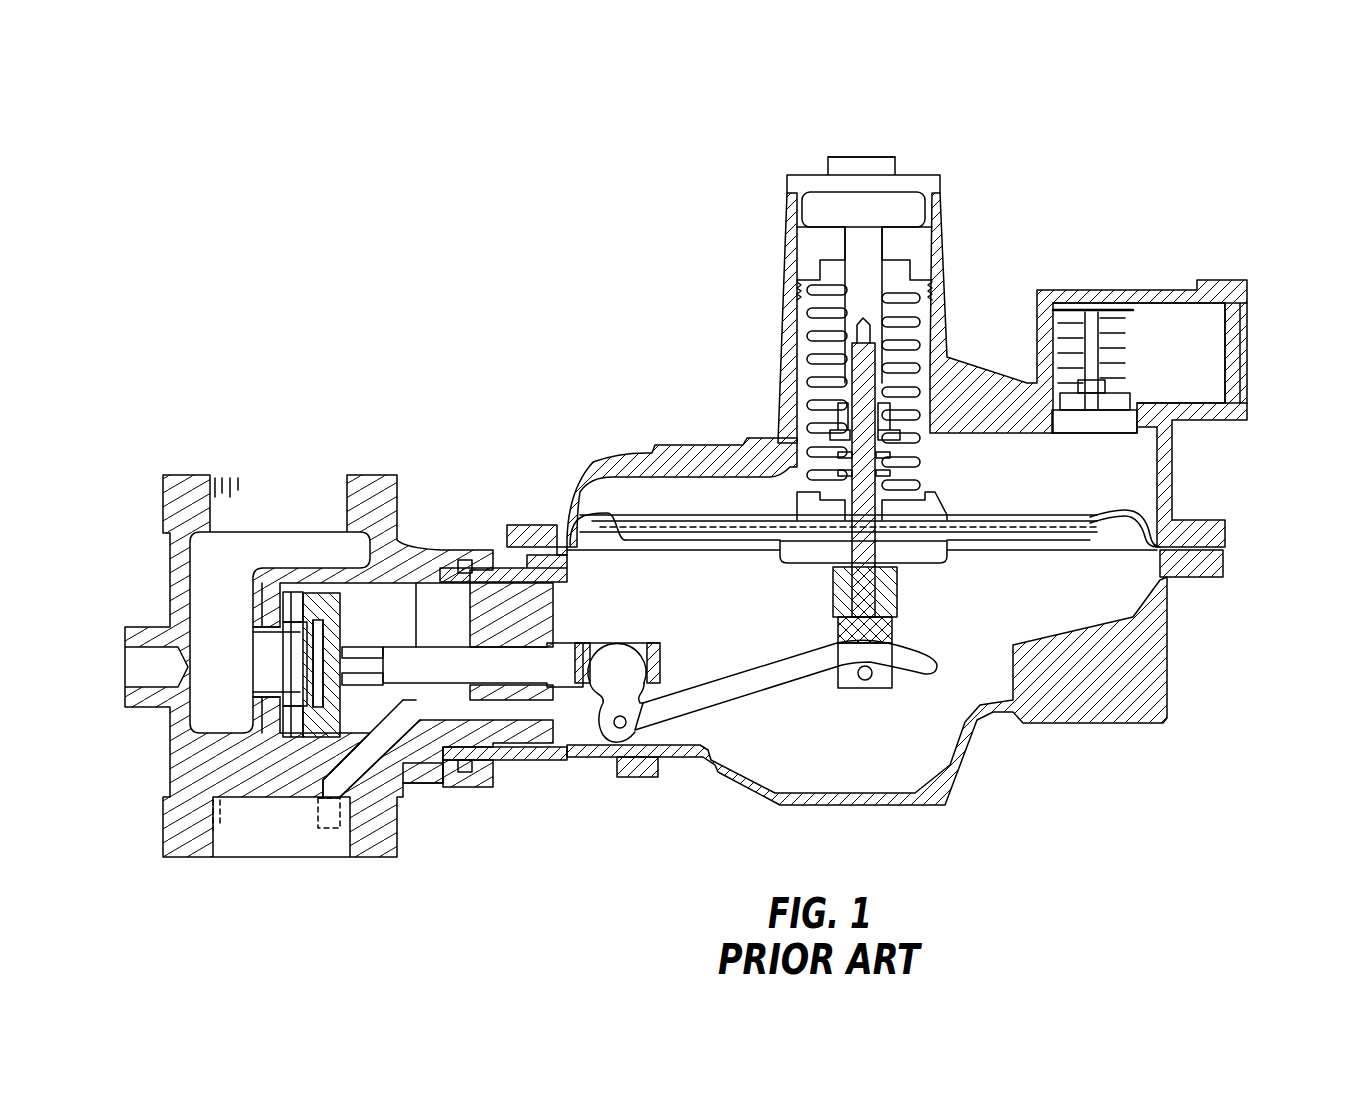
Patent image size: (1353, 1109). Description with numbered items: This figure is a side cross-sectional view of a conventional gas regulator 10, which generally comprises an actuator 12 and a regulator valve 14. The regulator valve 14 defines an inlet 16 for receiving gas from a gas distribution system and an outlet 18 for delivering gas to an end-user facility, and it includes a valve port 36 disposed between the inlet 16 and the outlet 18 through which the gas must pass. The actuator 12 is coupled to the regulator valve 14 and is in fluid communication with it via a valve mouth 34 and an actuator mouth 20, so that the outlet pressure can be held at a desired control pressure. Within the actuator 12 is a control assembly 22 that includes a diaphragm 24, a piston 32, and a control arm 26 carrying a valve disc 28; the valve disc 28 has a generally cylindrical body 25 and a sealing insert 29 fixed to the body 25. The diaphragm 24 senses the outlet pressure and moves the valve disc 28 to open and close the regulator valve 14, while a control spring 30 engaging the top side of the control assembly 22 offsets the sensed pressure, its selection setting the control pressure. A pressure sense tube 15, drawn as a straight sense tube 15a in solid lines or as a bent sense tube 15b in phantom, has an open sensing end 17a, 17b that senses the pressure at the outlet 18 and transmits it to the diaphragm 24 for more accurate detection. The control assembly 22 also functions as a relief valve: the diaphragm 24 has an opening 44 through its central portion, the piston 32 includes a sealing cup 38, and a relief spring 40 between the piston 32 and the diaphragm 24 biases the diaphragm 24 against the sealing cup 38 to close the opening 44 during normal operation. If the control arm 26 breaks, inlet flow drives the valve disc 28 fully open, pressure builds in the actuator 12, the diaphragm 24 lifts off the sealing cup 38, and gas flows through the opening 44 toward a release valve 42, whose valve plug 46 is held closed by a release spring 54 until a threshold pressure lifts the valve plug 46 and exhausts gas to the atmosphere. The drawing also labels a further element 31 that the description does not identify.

The gas regulator 10 is at (985, 144).
The actuator 12 is at (950, 313).
The regulator valve 14 is at (395, 466).
The pressure sense tube 15 is at (375, 765).
The straight sense tube 15a is at (347, 773).
The bent sense tube 15b is at (315, 803).
The inlet 16 is at (215, 497).
The open sensing end 17a is at (322, 787).
The open sensing end 17b is at (328, 830).
The outlet 18 is at (218, 838).
The actuator mouth 20 is at (528, 773).
The control assembly 22 is at (925, 582).
The diaphragm 24 is at (1100, 510).
The cylindrical body 25 is at (310, 738).
The control arm 26 is at (684, 730).
The valve disc 28 is at (329, 590).
The sealing insert 29 is at (290, 668).
The control spring 30 is at (820, 350).
The seal retainer 31 is at (285, 612).
The piston 32 is at (860, 410).
The valve mouth 34 is at (420, 782).
The valve port 36 is at (265, 652).
The sealing cup 38 is at (790, 565).
The relief spring 40 is at (885, 450).
The release valve 42 is at (1140, 351).
The opening 44 is at (860, 480).
The valve plug 46 is at (1113, 422).
The release spring 54 is at (1128, 325).